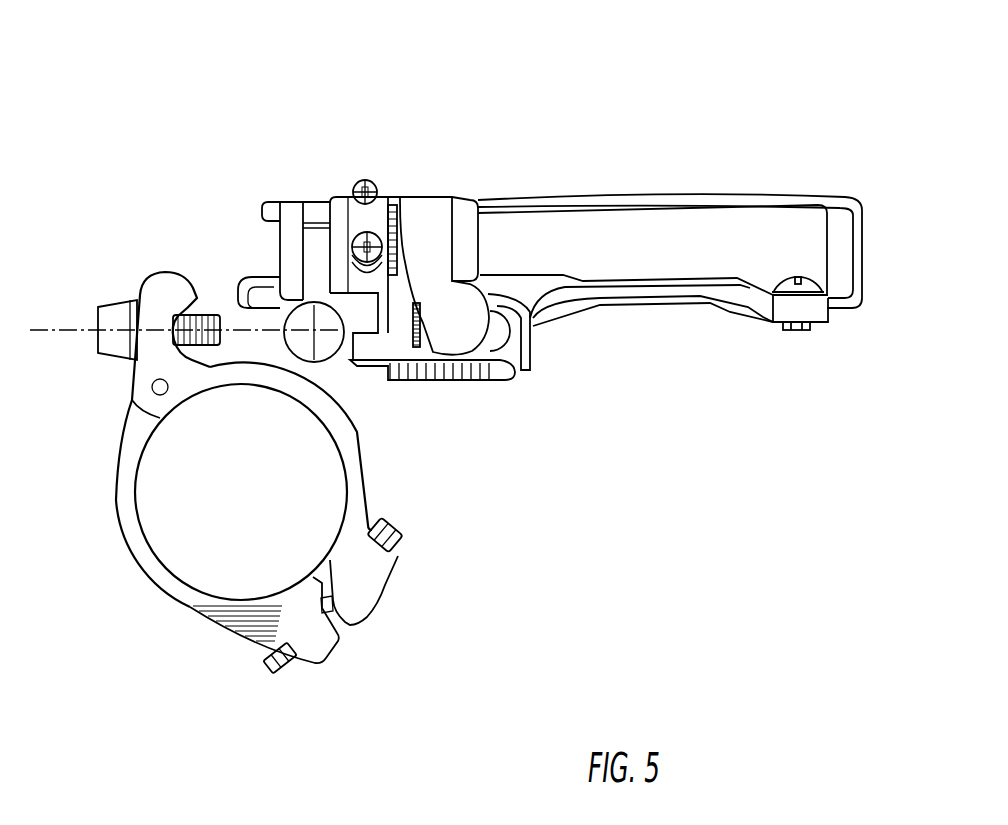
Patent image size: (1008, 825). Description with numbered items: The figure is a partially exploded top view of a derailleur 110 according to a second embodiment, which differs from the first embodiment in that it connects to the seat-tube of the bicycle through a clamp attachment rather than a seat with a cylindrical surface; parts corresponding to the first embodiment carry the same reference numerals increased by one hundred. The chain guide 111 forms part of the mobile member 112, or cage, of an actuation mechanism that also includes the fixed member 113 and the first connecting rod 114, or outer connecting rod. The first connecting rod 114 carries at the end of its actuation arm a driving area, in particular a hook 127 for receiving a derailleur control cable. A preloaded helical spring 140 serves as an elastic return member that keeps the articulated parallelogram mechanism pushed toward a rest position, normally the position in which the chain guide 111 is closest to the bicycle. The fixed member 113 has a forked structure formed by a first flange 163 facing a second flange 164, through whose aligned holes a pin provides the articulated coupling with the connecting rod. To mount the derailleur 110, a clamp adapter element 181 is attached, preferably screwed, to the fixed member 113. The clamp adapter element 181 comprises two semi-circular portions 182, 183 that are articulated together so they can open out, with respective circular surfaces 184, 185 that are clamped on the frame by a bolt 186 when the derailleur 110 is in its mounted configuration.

The derailleur 110 is at (545, 92).
The chain guide 111 is at (863, 225).
The mobile member 112 is at (680, 197).
The fixed member 113 is at (360, 213).
The first connecting rod 114 is at (430, 228).
The hook 127 is at (533, 325).
The helical spring 140 is at (430, 375).
The first flange 163 is at (412, 200).
The second flange 164 is at (470, 220).
The clamp adapter element 181 is at (88, 516).
The semi-circular portion 182 is at (192, 603).
The semi-circular portion 183 is at (360, 473).
The circular surface 184 is at (155, 550).
The circular surface 185 is at (322, 425).
The bolt 186 is at (403, 540).